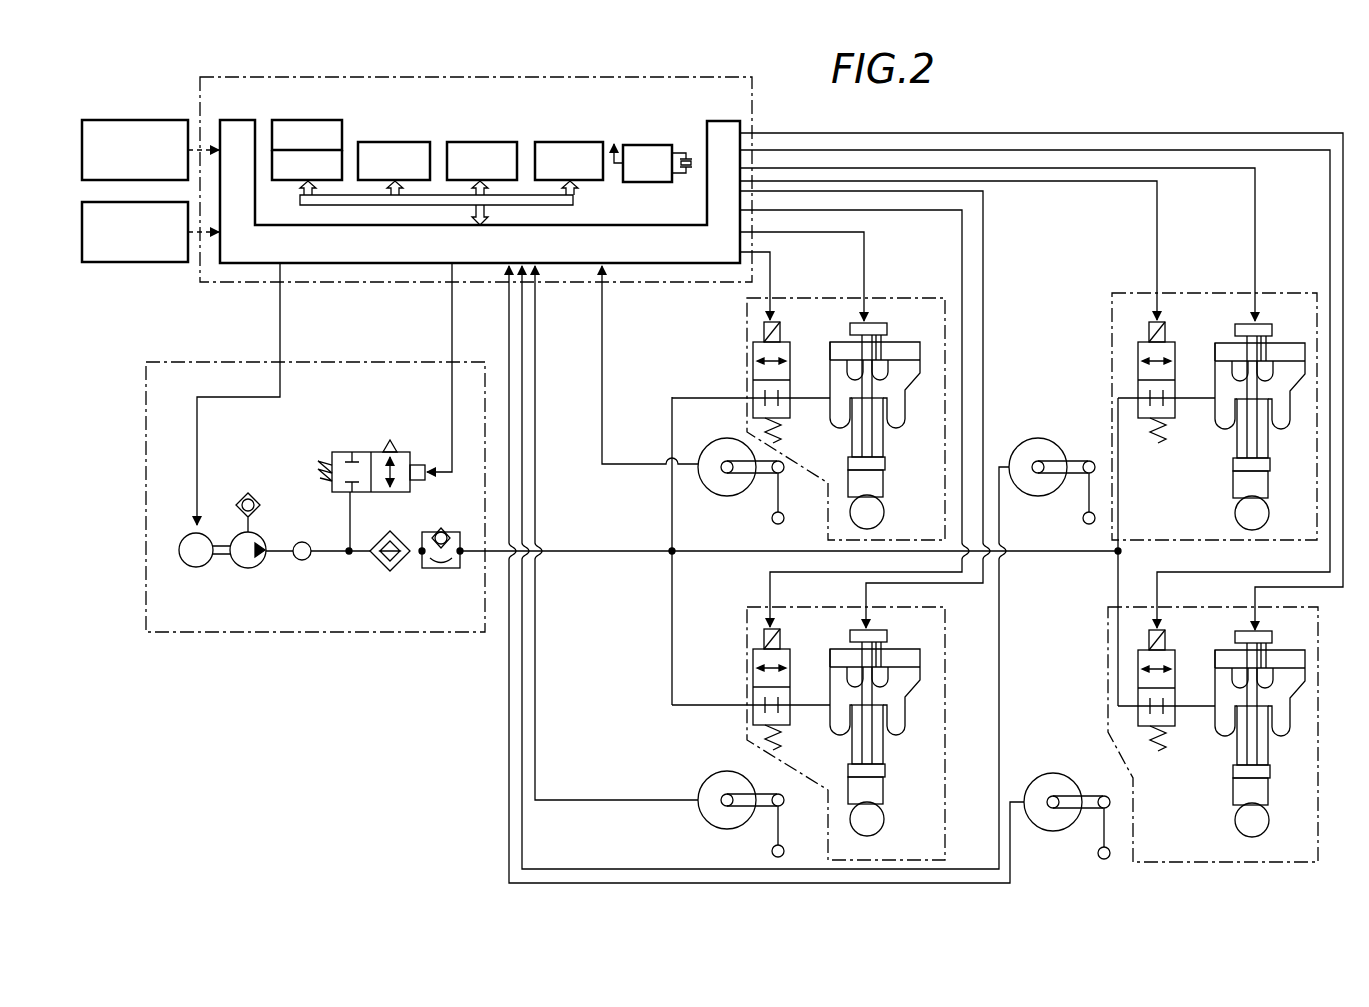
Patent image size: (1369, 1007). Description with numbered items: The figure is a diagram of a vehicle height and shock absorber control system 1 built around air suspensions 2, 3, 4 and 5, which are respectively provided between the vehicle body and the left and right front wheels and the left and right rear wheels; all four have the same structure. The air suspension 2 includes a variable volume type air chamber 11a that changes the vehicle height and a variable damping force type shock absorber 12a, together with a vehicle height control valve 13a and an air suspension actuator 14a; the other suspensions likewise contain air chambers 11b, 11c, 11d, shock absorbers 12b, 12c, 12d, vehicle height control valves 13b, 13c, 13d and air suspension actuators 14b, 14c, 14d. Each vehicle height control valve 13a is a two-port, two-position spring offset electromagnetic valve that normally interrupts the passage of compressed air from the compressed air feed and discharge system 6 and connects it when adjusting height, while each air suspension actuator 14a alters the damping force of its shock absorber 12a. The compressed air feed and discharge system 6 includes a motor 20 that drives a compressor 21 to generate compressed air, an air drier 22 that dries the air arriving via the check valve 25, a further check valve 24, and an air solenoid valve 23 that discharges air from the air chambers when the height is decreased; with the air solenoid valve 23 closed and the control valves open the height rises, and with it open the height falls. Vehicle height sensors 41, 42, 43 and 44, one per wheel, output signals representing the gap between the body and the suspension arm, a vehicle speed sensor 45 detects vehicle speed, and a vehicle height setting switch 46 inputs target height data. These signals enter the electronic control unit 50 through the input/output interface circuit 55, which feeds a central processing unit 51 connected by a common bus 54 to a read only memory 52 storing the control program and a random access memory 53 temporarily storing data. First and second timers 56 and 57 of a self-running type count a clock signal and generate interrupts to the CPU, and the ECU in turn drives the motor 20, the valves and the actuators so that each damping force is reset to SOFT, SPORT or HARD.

The tilt control system 1 is at (1088, 127).
The air suspension 2 is at (905, 298).
The air suspension 3 is at (947, 651).
The air suspension 4 is at (1128, 292).
The air suspension 5 is at (1108, 652).
The compressed air feed and discharge system 6 is at (225, 360).
The variable volume type air chamber 11a is at (899, 430).
The air chamber 11b is at (899, 737).
The air chamber 11c is at (1282, 430).
The air chamber 11d is at (1282, 737).
The variable damping force type shock absorber 12a is at (886, 485).
The shock absorber 12b is at (886, 792).
The shock absorber 12c is at (1270, 488).
The shock absorber 12d is at (1270, 795).
The vehicle height control valve 13a is at (776, 340).
The vehicle height control valve 13b is at (776, 647).
The vehicle height control valve 13c is at (1151, 341).
The vehicle height control valve 13d is at (1167, 640).
The air suspension actuator 14a is at (888, 333).
The air suspension actuator 14b is at (888, 640).
The air suspension actuator 14c is at (1274, 335).
The air suspension actuator 14d is at (1274, 641).
The motor 20 is at (197, 567).
The compressor 21 is at (249, 568).
The air drier 22 is at (375, 563).
The air solenoid valve 23 is at (358, 452).
The check valve 24 is at (446, 578).
The check valve 25 is at (302, 560).
The vehicle height sensor 41 is at (717, 441).
The vehicle height sensor 42 is at (717, 774).
The vehicle height sensor 43 is at (1057, 442).
The vehicle height sensor 44 is at (1057, 775).
The vehicle speed sensor 45 is at (122, 120).
The vehicle height setting switch 46 is at (130, 262).
The electronic control unit 50 is at (222, 283).
The central processing unit 51 is at (560, 142).
The read only memory 52 is at (478, 142).
The random access memory 53 is at (388, 142).
The common bus 54 is at (574, 203).
The input/output interface circuit 55 is at (634, 226).
The first timer 56 is at (282, 181).
The second timer 57 is at (302, 120).